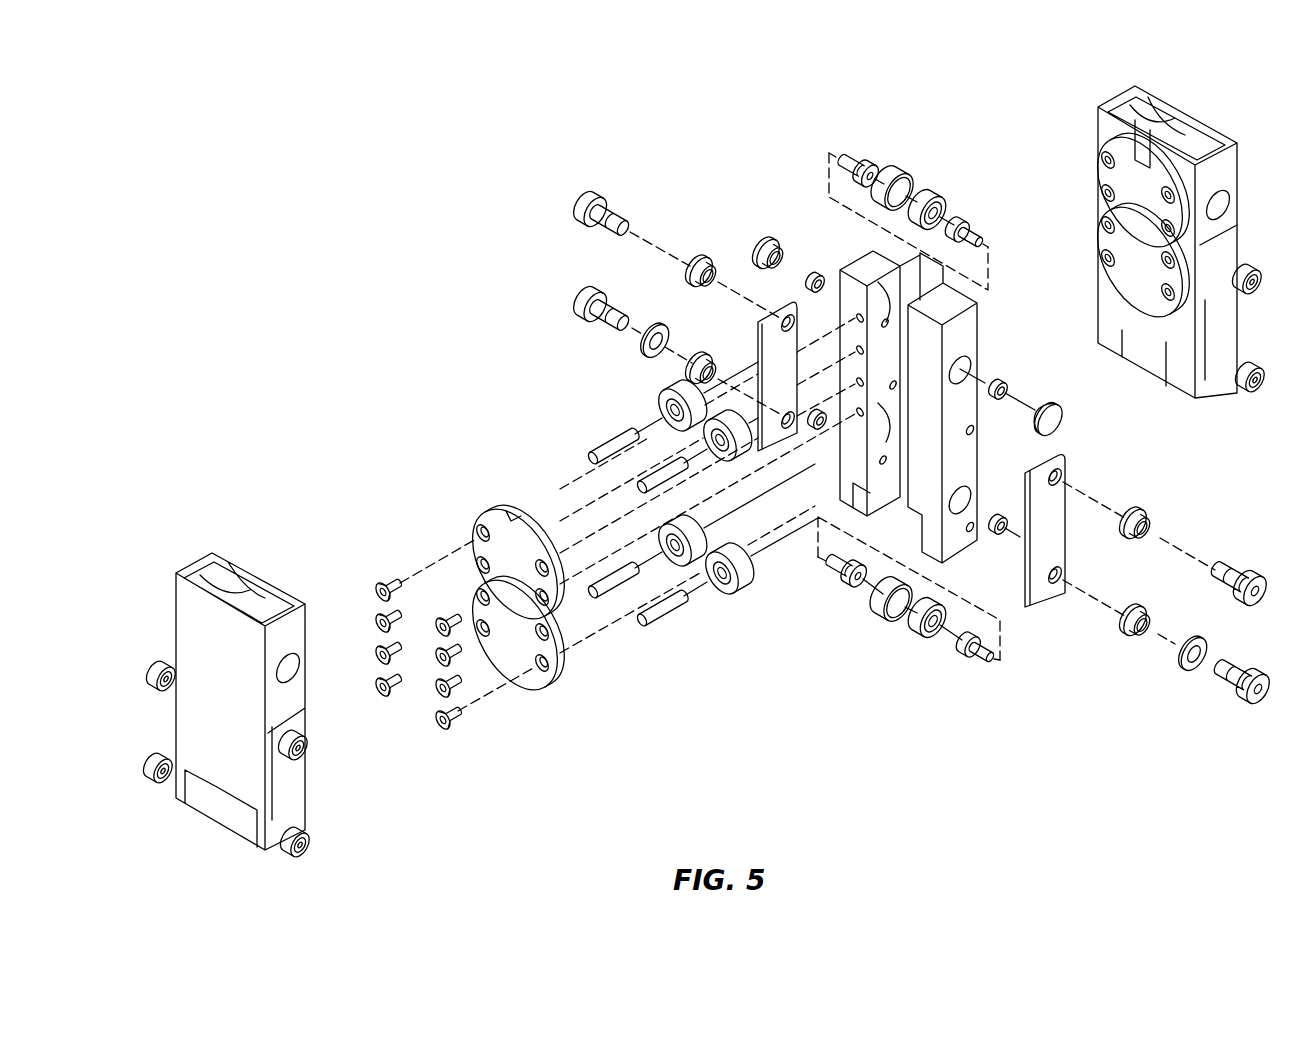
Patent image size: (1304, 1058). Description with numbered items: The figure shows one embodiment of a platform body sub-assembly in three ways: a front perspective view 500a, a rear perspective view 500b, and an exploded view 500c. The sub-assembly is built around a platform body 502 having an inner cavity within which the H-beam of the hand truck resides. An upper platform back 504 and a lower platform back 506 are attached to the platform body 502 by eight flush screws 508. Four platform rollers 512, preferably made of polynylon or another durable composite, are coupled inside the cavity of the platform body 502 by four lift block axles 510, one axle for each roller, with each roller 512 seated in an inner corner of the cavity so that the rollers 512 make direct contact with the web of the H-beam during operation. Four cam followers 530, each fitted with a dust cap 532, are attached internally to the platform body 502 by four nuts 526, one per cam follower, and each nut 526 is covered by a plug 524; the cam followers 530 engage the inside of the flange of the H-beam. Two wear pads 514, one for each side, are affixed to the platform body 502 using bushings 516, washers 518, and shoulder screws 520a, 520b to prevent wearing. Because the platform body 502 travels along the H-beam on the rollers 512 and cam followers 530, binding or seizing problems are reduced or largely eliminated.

The front perspective view 500a is at (238, 550).
The rear perspective view 500b is at (1206, 104).
The exploded view 500c is at (365, 232).
The platform body 502 is at (843, 258).
The upper platform back 504 is at (568, 611).
The lower platform back 506 is at (536, 692).
The flush screws 508 is at (461, 727).
The lift block axles 510 is at (665, 620).
The platform rollers 512 is at (735, 596).
The wear pads 514 is at (1043, 607).
The bushings 516 is at (699, 253).
The washers 518 is at (1176, 673).
The shoulder screws 520a is at (1229, 694).
The shoulder screws 520b is at (585, 185).
The plug 524 is at (754, 243).
The nuts 526 is at (811, 271).
The cam followers 530 is at (852, 152).
The dust caps 532 is at (903, 166).